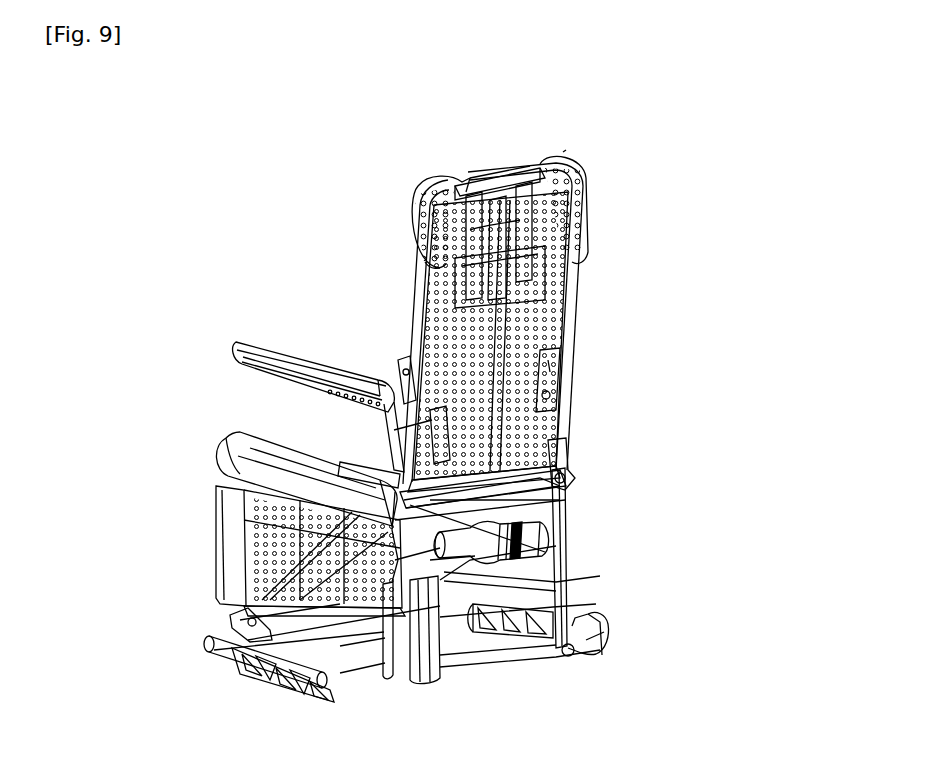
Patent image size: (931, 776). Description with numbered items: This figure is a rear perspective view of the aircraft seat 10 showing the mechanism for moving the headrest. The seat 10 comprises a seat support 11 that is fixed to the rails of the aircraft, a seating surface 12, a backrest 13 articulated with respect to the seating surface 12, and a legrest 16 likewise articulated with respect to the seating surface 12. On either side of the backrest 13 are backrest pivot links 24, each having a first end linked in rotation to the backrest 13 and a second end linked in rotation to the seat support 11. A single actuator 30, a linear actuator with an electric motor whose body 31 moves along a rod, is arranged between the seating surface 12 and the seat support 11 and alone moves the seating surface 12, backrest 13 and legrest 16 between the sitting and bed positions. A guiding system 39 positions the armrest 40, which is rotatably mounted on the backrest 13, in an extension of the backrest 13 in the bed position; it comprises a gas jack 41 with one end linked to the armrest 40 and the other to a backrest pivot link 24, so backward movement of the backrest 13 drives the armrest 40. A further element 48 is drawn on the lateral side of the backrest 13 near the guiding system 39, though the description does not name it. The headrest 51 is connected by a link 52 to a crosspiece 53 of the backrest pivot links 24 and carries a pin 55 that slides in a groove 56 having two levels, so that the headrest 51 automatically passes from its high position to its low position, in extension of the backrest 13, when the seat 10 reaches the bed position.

The seat 10 is at (563, 152).
The seat support 11 is at (272, 632).
The seating surface 12 is at (278, 440).
The backrest 13 is at (575, 324).
The legrest 16 is at (215, 508).
The backrest pivot link 24 is at (352, 655).
The actuator 30 is at (478, 604).
The body 31 is at (578, 520).
The guiding system 39 is at (440, 426).
The armrest 40 is at (272, 346).
The gas jack 41 is at (400, 478).
The link 48 is at (405, 366).
The headrest 51 is at (485, 172).
The link 52 is at (572, 366).
The crosspiece 53 is at (566, 450).
The pin 55 is at (578, 214).
The groove 56 is at (580, 190).